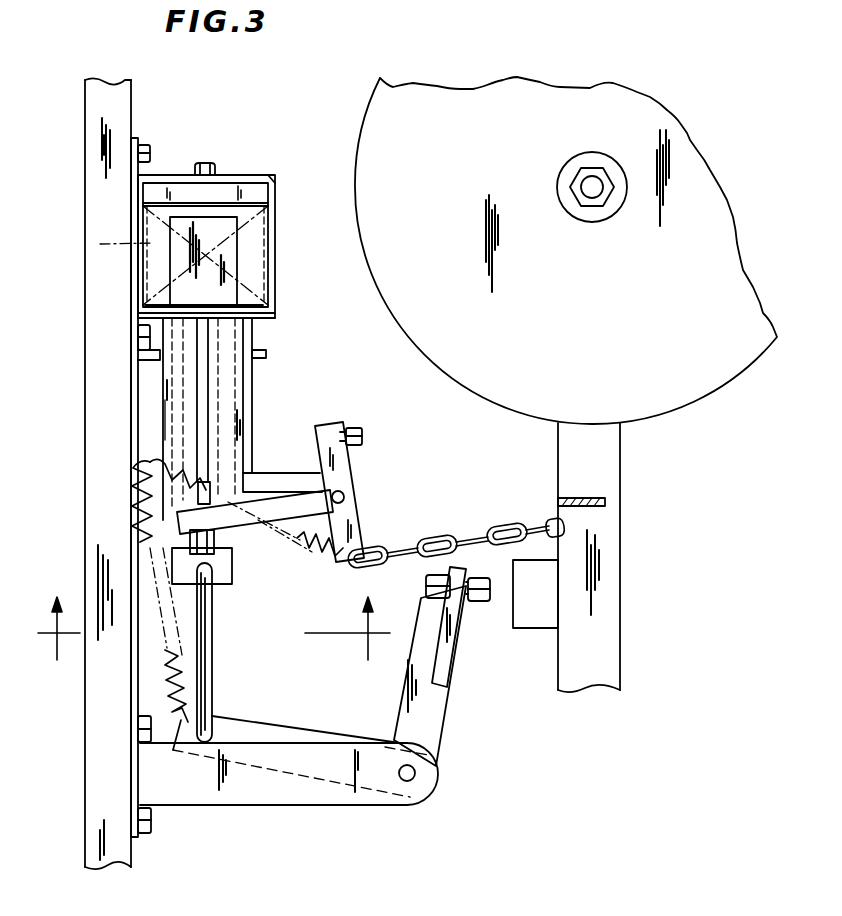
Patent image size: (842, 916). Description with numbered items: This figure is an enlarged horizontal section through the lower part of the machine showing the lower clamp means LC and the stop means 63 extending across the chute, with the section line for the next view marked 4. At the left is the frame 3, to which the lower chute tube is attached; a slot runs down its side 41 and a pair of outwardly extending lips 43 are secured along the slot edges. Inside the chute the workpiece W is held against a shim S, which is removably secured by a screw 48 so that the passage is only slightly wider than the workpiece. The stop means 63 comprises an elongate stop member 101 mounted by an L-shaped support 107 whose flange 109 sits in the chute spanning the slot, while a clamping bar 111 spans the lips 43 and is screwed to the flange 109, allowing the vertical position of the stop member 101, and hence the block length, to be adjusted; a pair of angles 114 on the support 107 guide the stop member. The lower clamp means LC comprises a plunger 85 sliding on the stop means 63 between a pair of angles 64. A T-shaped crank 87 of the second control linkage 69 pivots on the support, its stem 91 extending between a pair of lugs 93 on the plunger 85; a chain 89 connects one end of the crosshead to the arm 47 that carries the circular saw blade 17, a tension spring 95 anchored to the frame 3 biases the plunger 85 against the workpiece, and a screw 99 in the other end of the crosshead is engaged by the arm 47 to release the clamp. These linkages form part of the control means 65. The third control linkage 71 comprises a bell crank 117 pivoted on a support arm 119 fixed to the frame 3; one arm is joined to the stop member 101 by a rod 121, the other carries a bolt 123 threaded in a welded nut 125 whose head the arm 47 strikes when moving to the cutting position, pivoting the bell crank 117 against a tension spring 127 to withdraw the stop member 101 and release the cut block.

The frame 3 is at (105, 368).
The shim S is at (250, 190).
The workpiece W is at (100, 244).
The screw 48 is at (208, 165).
The stop member 101 is at (232, 246).
The flange 109 is at (248, 308).
The side 41 is at (276, 322).
The lip 43 is at (266, 352).
The clamping bar 111 is at (258, 360).
The angle 114 is at (165, 362).
The lower clamp means LC is at (165, 418).
The stop means 63 is at (182, 464).
The angle 64 is at (140, 462).
The plunger 85 is at (200, 556).
The lug 93 is at (212, 490).
The stem 91 is at (283, 522).
The L-shaped support 107 is at (283, 472).
The T-shaped crank 87 is at (330, 425).
The second control linkage 69 is at (358, 462).
The screw 99 is at (365, 436).
The control means 65 is at (348, 416).
The tension spring 95 is at (325, 560).
The chain 89 is at (445, 540).
The circular saw blade 17 is at (678, 373).
The arm 47 is at (610, 627).
The bell crank 117 is at (450, 676).
The bolt 123 is at (478, 605).
The nut 125 is at (430, 583).
The third control linkage 71 is at (450, 757).
The support arm 119 is at (253, 797).
The rod 121 is at (210, 683).
The tension spring 127 is at (185, 690).
The section line 4 is at (215, 634).